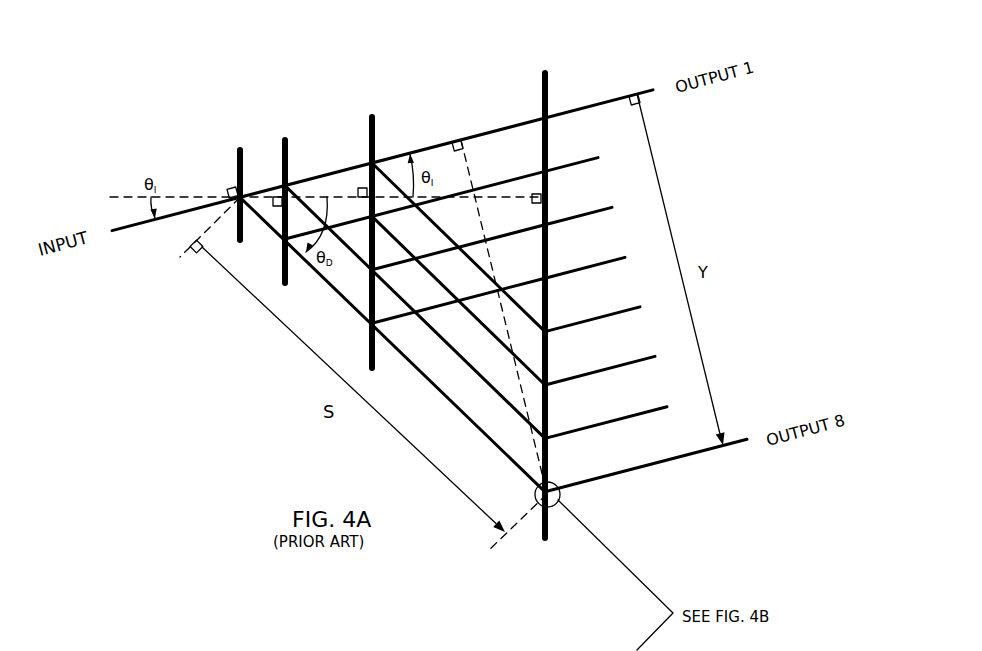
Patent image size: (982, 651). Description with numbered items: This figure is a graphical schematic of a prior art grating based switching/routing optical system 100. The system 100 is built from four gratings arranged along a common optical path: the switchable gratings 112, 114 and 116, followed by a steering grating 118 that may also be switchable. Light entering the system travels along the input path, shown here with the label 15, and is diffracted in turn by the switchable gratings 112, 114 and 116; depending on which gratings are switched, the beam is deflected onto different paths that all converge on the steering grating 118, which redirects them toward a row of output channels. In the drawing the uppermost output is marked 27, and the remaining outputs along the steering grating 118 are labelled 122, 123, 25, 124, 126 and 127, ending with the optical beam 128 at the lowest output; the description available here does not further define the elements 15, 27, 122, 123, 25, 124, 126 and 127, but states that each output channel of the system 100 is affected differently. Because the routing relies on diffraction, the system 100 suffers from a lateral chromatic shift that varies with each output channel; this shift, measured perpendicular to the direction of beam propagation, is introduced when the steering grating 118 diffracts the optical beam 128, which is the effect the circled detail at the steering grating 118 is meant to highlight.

The grating based switching/routing system 100 is at (160, 47).
The input beam 15 is at (133, 226).
The first output beam 27 is at (597, 101).
The switchable grating 112 is at (244, 158).
The switchable grating 114 is at (288, 148).
The switchable grating 116 is at (377, 127).
The steering grating 118 is at (548, 78).
The output beam 122 is at (578, 162).
The output beam 123 is at (592, 213).
The output beam 25 is at (602, 263).
The output beam 124 is at (617, 313).
The output beam 126 is at (630, 363).
The output beam 127 is at (643, 413).
The optical beam 128 is at (658, 462).